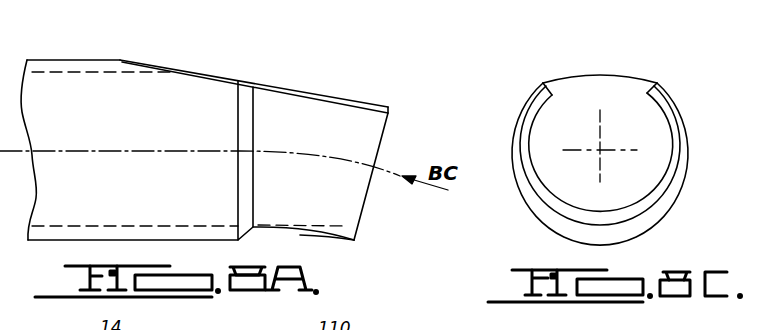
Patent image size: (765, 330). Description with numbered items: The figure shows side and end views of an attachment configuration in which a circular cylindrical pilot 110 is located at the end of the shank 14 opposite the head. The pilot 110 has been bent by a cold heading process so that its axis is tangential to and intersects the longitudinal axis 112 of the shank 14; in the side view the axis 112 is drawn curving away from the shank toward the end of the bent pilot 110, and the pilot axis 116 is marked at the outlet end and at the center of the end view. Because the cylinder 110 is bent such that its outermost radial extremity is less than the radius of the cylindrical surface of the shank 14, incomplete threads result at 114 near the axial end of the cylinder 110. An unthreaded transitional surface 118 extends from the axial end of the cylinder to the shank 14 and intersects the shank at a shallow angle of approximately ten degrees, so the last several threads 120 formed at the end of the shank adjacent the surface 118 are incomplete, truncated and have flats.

In FIG. 8A, the shank 14 is at (67, 86).
In FIG. 8A, the circular cylindrical pilot 110 is at (340, 122).
In FIG. 8C, the circular cylindrical pilot 110 is at (643, 195).
In FIG. 8A, the longitudinal axis 112 is at (68, 153).
In FIG. 8A, the incomplete threads 114 is at (327, 238).
In FIG. 8C, the incomplete threads 114 is at (568, 212).
In FIG. 8A, the nozzle outlet axis 116 is at (396, 175).
In FIG. 8C, the nozzle outlet axis 116 is at (598, 149).
In FIG. 8A, the unthreaded transitional surface 118 is at (302, 88).
In FIG. 8A, the threads 120 is at (178, 62).